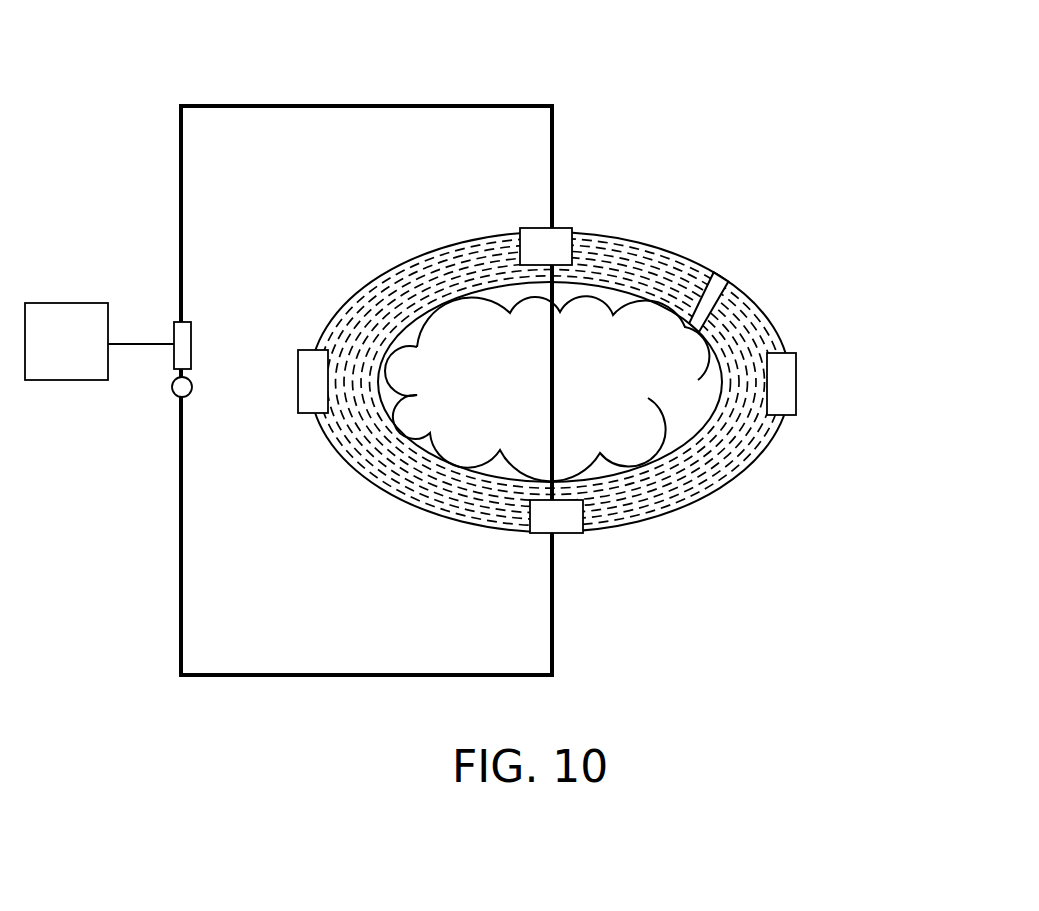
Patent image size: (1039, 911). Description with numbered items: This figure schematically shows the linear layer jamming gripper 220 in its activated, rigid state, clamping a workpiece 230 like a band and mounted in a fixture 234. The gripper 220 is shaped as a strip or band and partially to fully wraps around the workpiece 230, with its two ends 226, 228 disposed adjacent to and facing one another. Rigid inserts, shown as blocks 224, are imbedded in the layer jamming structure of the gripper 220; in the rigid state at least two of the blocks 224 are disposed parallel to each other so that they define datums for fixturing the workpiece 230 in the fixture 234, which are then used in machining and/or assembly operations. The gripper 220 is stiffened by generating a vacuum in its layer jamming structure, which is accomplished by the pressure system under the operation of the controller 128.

The fixture 234 is at (357, 100).
The controller 128 is at (100, 352).
The gripper 220 is at (585, 373).
The blocks 224 is at (566, 228).
The end 226 is at (733, 291).
The end 228 is at (687, 337).
The workpiece 230 is at (570, 400).